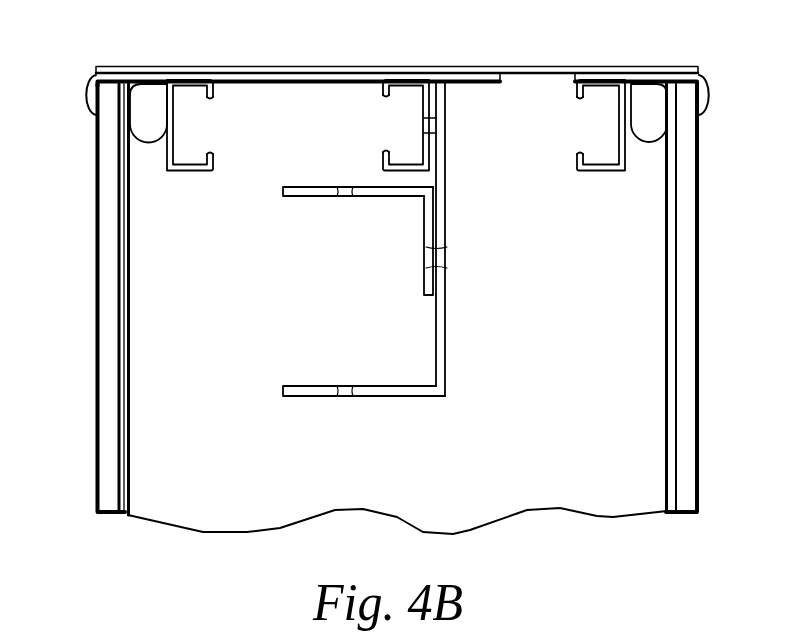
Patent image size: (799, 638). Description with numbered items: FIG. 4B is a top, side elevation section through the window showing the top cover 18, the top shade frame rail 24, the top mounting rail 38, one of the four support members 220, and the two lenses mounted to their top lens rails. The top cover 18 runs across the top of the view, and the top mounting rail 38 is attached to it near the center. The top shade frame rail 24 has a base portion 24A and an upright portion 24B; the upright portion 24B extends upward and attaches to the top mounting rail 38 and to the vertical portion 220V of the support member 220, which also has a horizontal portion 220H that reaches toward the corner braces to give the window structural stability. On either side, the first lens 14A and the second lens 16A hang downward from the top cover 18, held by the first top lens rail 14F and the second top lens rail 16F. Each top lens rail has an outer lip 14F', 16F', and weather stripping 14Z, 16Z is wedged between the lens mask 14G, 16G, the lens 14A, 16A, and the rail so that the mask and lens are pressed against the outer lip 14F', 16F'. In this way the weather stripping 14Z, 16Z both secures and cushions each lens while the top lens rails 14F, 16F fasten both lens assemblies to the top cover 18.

The top cover 18 is at (385, 68).
The top lens rail 14F is at (270, 90).
The top lens rail 16F is at (666, 92).
The outer lip 14F' is at (63, 110).
The outer lip 16F' is at (733, 108).
The weather stripping 14Z is at (145, 95).
The weather stripping 16Z is at (648, 87).
The lens 14A is at (98, 320).
The lens 16A is at (698, 263).
The lens mask 14G is at (124, 423).
The lens mask 16G is at (667, 425).
The top mounting rail 38 is at (423, 136).
The top shade frame rail 24 is at (361, 238).
The base portion 24A is at (305, 385).
The upright portion 24B is at (447, 206).
The support member 220 is at (324, 264).
The horizontal portion 220H is at (303, 197).
The vertical portion 220V is at (423, 282).